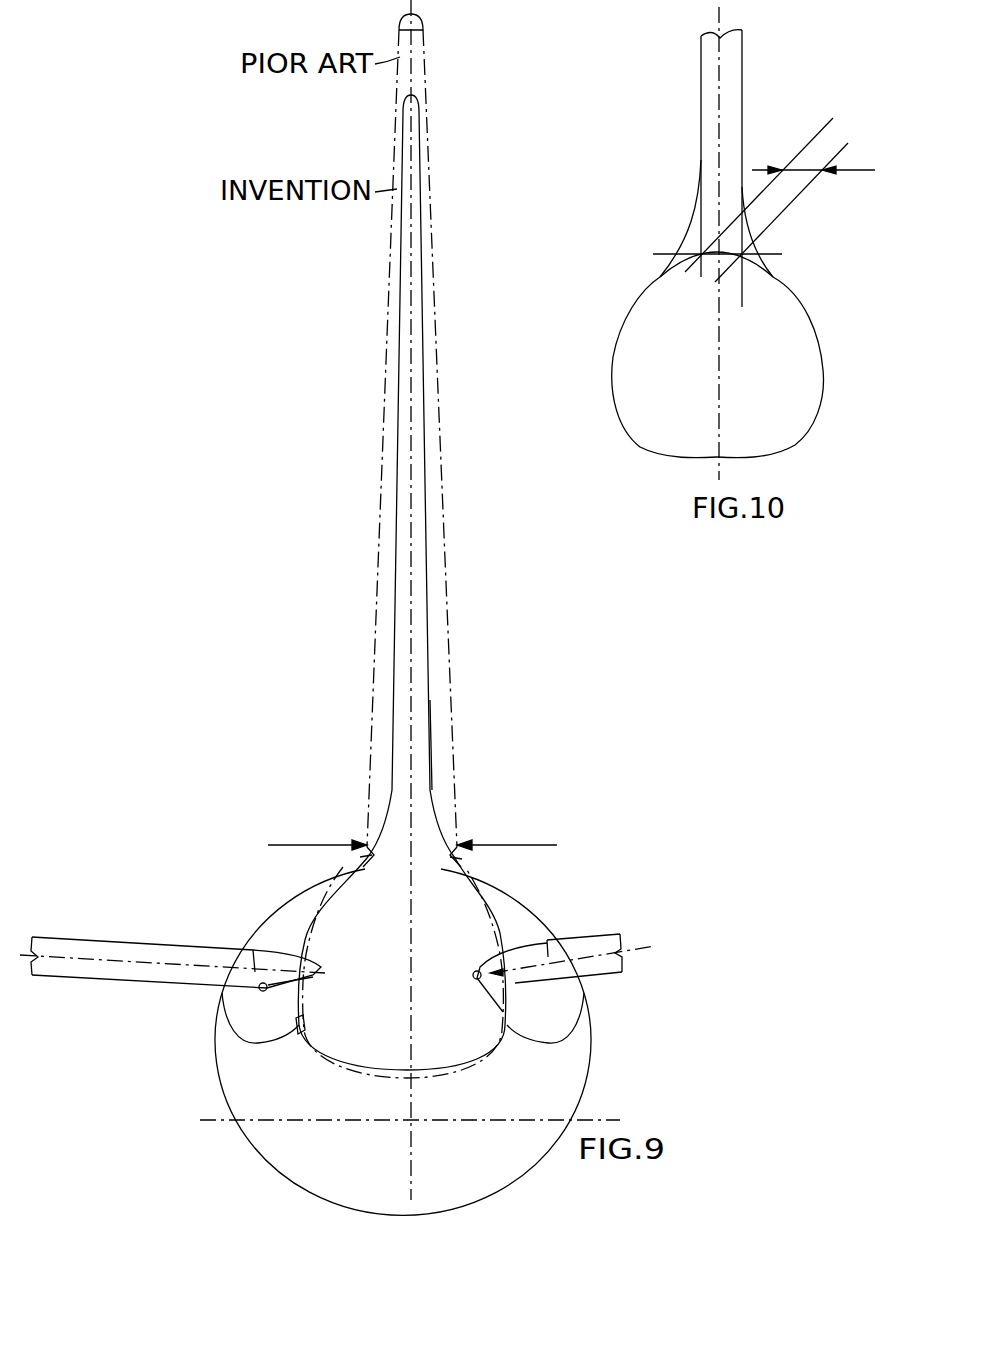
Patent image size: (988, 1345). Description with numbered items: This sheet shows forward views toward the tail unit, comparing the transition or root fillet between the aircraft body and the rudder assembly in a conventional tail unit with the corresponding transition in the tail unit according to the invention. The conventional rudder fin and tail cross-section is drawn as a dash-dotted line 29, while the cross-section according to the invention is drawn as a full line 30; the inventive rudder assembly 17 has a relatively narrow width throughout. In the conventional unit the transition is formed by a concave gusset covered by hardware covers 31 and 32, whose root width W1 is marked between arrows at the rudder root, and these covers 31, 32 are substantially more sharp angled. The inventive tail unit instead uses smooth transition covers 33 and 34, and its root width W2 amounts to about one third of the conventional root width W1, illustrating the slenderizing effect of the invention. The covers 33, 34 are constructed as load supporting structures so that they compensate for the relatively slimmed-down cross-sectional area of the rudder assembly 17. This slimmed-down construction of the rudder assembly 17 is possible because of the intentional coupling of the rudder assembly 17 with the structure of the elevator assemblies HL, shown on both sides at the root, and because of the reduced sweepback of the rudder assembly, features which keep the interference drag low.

In FIG. 9, the rudder assembly 17 is at (425, 340).
In FIG. 10, the rudder assembly 17 is at (700, 112).
In FIG. 9, the dash-dotted line 29 is at (375, 633).
In FIG. 9, the full line 30 is at (432, 746).
In FIG. 9, the hardware cover 31 is at (360, 857).
In FIG. 9, the hardware cover 32 is at (460, 860).
In FIG. 10, the transition cover 33 is at (688, 238).
In FIG. 10, the transition cover 34 is at (758, 240).
In FIG. 9, the root width W1 is at (412, 826).
In FIG. 10, the root width W2 is at (817, 153).
In FIG. 9, the elevator assemblies HL is at (125, 970).